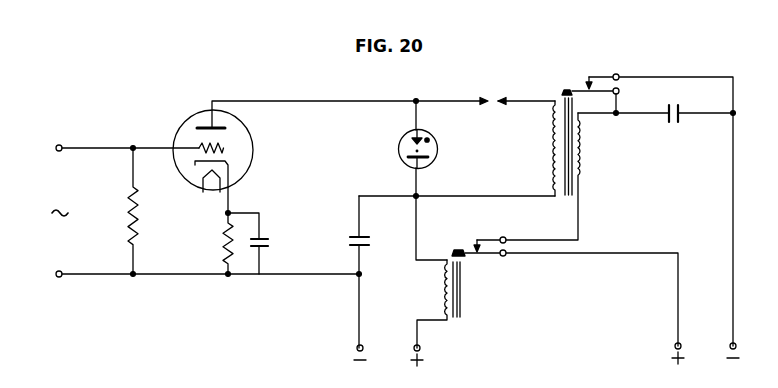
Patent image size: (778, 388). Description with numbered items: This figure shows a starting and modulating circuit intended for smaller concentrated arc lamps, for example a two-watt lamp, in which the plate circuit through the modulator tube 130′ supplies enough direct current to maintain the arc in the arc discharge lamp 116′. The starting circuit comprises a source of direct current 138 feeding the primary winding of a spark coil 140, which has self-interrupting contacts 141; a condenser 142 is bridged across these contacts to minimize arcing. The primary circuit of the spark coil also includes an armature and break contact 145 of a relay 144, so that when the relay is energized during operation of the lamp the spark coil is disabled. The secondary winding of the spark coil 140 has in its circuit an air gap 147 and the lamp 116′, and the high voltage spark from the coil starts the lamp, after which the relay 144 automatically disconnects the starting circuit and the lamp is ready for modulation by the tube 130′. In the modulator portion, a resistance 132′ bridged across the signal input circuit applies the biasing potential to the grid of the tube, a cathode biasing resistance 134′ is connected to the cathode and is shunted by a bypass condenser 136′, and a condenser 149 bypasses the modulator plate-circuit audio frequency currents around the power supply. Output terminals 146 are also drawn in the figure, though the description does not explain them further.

The modulator tube 130′ is at (176, 128).
The resistance 132′ is at (130, 205).
The cathode biasing resistance 134′ is at (223, 246).
The bypass condenser 136′ is at (268, 243).
The arc discharge lamp 116′ is at (437, 150).
The condenser 149 is at (365, 247).
The output terminals 146 is at (414, 345).
The relay 144 is at (461, 296).
The armature and break contact 145 is at (475, 249).
The air gap 147 is at (493, 95).
The spark coil 140 is at (587, 150).
The self-interrupting contacts 141 is at (588, 86).
The condenser 142 is at (672, 124).
The source of direct current 138 is at (730, 345).